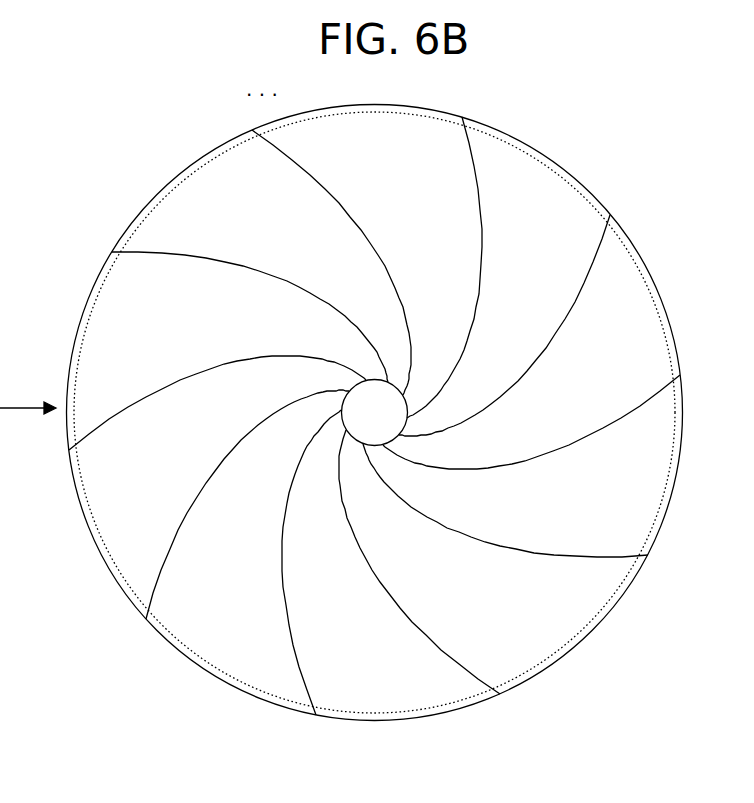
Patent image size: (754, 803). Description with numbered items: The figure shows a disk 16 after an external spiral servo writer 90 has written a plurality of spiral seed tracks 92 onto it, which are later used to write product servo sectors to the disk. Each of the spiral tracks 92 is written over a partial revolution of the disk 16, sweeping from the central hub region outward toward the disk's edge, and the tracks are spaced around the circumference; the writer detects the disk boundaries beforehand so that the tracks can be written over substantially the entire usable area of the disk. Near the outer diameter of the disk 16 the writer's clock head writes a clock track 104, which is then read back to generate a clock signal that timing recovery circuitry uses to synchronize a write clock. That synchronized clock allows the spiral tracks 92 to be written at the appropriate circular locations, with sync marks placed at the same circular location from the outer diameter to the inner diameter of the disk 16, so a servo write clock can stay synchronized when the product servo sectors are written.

The disk 16 is at (571, 164).
The external spiral servo writer 90 is at (0, 108).
The spiral seed tracks 92 is at (378, 421).
The clock track 104 is at (663, 500).